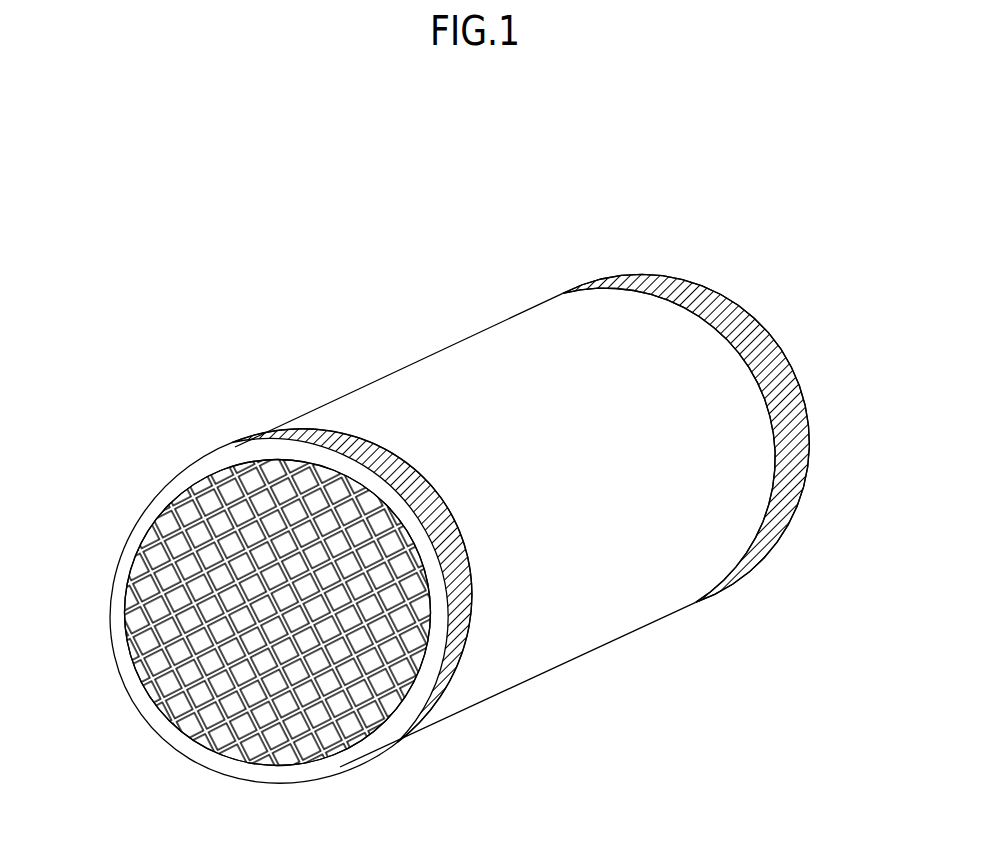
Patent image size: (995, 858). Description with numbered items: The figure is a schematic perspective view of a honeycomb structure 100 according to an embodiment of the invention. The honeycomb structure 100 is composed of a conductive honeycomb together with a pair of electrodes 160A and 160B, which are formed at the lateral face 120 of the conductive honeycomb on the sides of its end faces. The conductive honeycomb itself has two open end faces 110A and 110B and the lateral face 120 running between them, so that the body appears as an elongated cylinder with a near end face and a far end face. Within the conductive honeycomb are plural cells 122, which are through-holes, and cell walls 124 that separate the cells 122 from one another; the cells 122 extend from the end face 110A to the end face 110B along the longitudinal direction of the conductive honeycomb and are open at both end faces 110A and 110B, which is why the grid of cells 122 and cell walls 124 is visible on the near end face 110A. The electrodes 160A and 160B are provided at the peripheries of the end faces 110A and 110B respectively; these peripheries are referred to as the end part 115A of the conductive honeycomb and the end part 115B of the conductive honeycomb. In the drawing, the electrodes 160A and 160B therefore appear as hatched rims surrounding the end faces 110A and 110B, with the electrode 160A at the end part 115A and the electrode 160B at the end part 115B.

The honeycomb structure 100 is at (535, 163).
The end face 110A is at (143, 490).
The end face 110B is at (810, 332).
The end part of the conductive honeycomb 115A is at (275, 405).
The end part of the conductive honeycomb 115B is at (595, 263).
The lateral face 120 is at (558, 630).
The cell 122 is at (360, 693).
The cell wall 124 is at (223, 677).
The electrode 160A is at (262, 430).
The electrode 160B is at (778, 522).